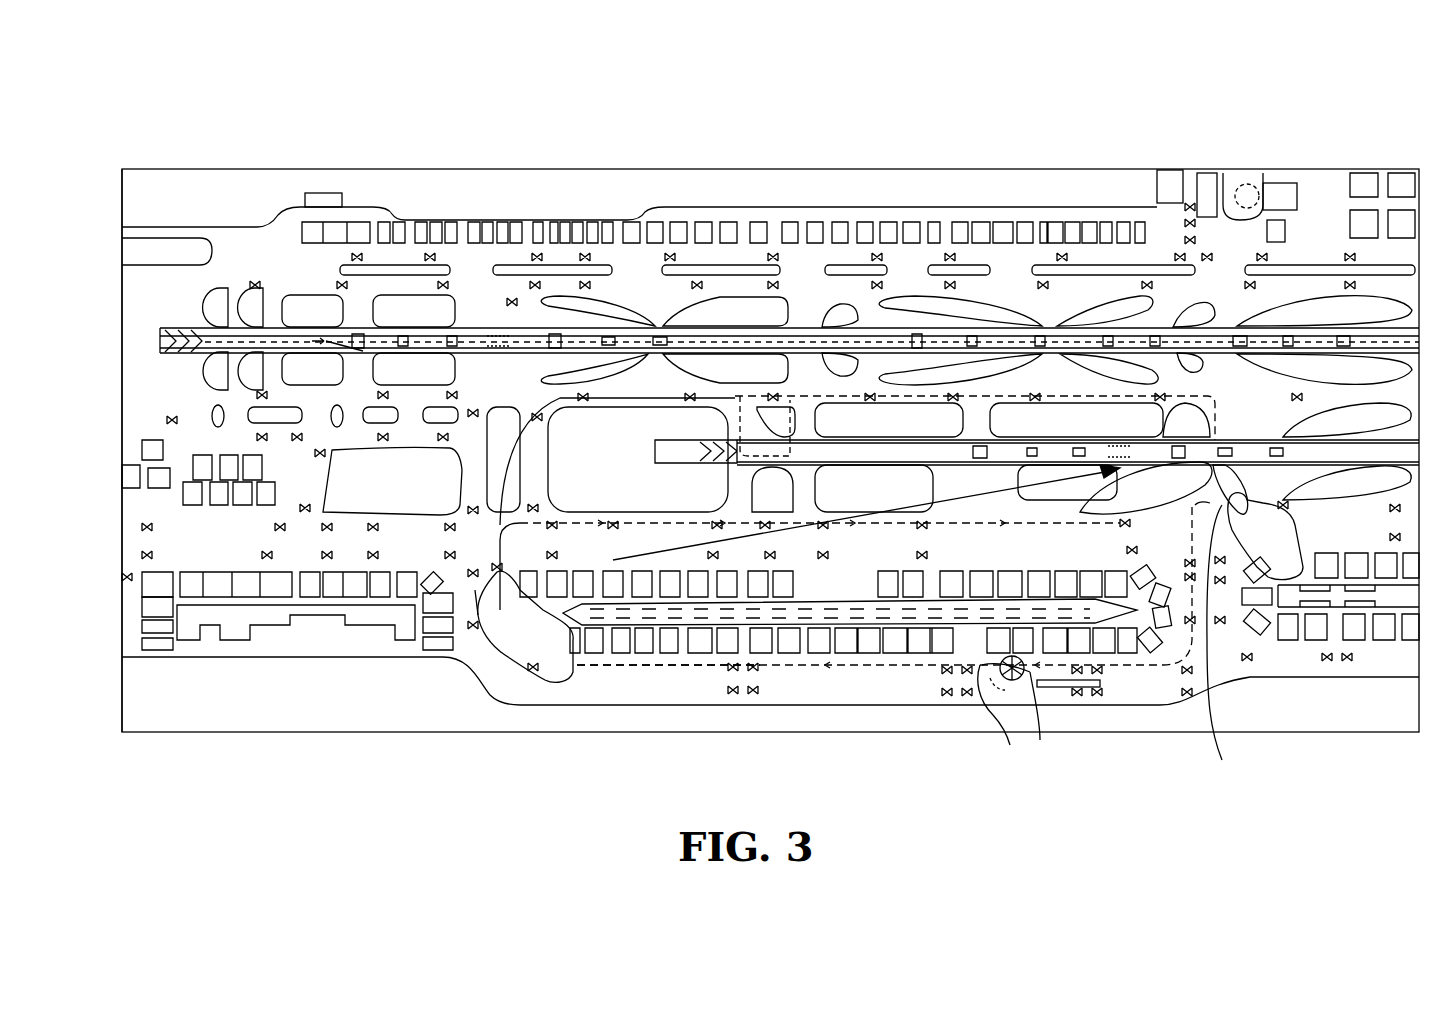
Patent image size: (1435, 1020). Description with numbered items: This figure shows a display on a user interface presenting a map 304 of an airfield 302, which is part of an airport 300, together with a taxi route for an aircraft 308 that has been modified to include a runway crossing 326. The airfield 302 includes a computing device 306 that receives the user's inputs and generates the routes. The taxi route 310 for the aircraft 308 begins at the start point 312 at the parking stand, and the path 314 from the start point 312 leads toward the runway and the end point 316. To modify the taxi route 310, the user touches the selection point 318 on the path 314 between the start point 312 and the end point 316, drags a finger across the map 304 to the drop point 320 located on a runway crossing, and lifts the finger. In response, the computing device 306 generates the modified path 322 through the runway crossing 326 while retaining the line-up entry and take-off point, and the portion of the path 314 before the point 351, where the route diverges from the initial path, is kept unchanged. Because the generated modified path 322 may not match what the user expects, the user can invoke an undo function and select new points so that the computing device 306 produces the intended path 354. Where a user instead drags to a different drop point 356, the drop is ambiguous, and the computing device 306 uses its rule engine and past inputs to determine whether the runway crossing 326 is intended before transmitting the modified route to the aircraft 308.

The airport 300 is at (318, 113).
The airfield 302 is at (121, 212).
The map 304 is at (148, 326).
The computing device 306 is at (1247, 190).
The aircraft 308 is at (1023, 685).
The taxi route 310 is at (633, 666).
The start point 312 is at (980, 672).
The path 314 is at (703, 668).
The end point 316 is at (777, 450).
The selection point 318 is at (476, 600).
The drop point 320 is at (1222, 450).
The modified path 322 is at (925, 395).
The runway crossing 326 is at (1197, 450).
The point 351 is at (500, 572).
The intended path 354 is at (1162, 698).
The different drop point 356 is at (1232, 520).